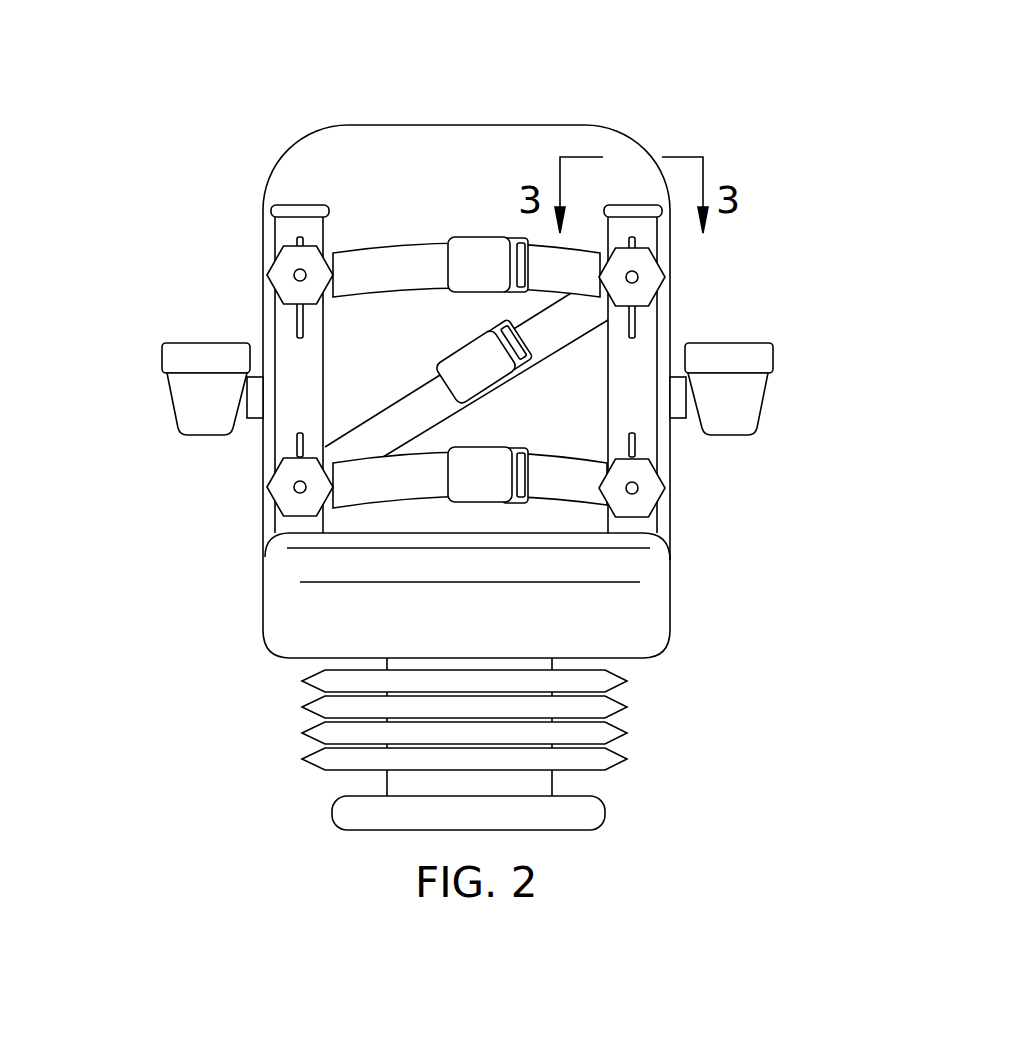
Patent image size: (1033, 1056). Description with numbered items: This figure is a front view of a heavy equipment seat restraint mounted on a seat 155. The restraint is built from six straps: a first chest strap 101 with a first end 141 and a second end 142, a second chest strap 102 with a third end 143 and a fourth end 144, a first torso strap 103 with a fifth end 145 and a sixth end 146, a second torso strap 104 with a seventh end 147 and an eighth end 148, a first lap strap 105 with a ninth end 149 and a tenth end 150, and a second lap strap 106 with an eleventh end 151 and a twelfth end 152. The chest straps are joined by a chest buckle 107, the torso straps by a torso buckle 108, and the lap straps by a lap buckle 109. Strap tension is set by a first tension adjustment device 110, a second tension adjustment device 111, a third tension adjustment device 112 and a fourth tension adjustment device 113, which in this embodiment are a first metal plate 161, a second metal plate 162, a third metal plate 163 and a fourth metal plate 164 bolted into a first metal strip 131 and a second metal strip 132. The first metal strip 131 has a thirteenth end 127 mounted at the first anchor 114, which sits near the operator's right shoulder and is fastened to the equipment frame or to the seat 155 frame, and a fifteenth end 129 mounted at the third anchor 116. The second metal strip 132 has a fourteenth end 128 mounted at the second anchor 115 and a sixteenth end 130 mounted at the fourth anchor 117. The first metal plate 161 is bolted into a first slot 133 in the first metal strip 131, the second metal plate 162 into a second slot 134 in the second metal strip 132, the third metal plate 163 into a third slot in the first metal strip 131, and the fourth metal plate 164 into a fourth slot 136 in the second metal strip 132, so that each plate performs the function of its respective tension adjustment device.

The first chest strap 101 is at (422, 250).
The second chest strap 102 is at (583, 255).
The first torso strap 103 is at (367, 427).
The second torso strap 104 is at (662, 348).
The first lap strap 105 is at (320, 462).
The second lap strap 106 is at (573, 497).
The chest buckle 107 is at (480, 252).
The torso buckle 108 is at (488, 385).
The lap buckle 109 is at (470, 497).
The first tension adjustment device 110 is at (278, 263).
The second tension adjustment device 111 is at (657, 276).
The third tension adjustment device 112 is at (285, 505).
The fourth tension adjustment device 113 is at (650, 497).
The first anchor 114 is at (279, 248).
The second anchor 115 is at (660, 160).
The third anchor 116 is at (265, 558).
The fourth anchor 117 is at (650, 520).
The thirteenth end 127 is at (303, 207).
The fourteenth end 128 is at (628, 205).
The fifteenth end 129 is at (298, 516).
The sixteenth end 130 is at (632, 520).
The first metal strip 131 is at (283, 333).
The second metal strip 132 is at (637, 400).
The first slot 133 is at (300, 237).
The second slot 134 is at (641, 205).
The fourth slot 136 is at (633, 447).
The first end 141 is at (340, 265).
The second end 142 is at (443, 290).
The third end 143 is at (620, 207).
The fourth end 144 is at (542, 255).
The fifth end 145 is at (297, 457).
The sixth end 146 is at (428, 380).
The seventh end 147 is at (660, 320).
The eighth end 148 is at (547, 347).
The ninth end 149 is at (332, 500).
The tenth end 150 is at (433, 497).
The eleventh end 151 is at (600, 497).
The twelfth end 152 is at (536, 497).
The seat 155 is at (482, 127).
The first metal plate 161 is at (293, 292).
The second metal plate 162 is at (657, 288).
The third metal plate 163 is at (268, 488).
The fourth metal plate 164 is at (663, 487).